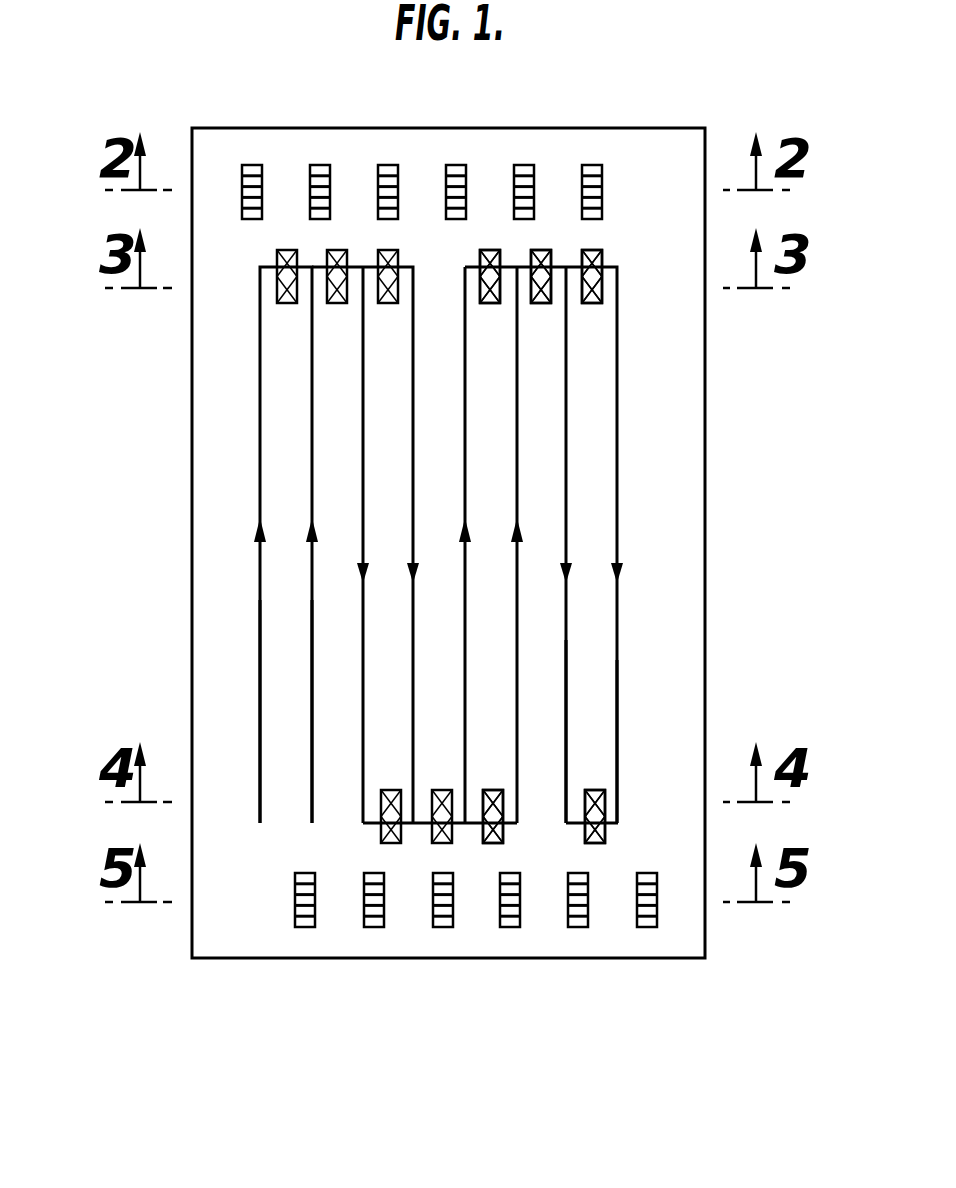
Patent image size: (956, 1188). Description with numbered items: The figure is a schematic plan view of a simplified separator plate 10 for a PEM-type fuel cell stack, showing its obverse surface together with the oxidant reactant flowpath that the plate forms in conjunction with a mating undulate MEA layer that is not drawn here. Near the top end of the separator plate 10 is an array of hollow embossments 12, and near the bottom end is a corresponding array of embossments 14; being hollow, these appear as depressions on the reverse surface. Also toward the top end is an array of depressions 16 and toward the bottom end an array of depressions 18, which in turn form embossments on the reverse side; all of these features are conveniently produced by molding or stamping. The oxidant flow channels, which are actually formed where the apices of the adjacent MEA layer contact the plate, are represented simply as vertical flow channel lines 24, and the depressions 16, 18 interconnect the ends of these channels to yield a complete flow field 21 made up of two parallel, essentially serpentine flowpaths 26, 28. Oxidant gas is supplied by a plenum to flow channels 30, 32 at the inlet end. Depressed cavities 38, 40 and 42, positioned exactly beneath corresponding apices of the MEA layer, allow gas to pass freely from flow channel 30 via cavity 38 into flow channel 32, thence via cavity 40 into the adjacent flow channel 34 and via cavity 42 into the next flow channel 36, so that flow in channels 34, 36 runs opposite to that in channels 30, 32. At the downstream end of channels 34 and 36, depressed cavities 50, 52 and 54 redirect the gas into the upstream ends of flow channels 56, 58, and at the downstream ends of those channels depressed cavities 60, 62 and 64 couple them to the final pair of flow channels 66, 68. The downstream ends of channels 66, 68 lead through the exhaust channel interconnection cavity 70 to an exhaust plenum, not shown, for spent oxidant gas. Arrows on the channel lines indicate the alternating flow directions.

The separator plate 10 is at (708, 510).
The embossments 12 is at (598, 166).
The embossments 14 is at (505, 928).
The depressions 16 is at (536, 252).
The depressions 18 is at (497, 833).
The flow field 21 is at (498, 743).
The flow channel lines 24 is at (260, 397).
The flowpath 26 is at (617, 415).
The flowpath 28 is at (566, 448).
The flow channel 30 is at (260, 672).
The flow channel 32 is at (312, 638).
The flow channel 34 is at (363, 373).
The flow channel 36 is at (413, 330).
The depressed cavity 38 is at (282, 265).
The depressed cavity 40 is at (337, 268).
The depressed cavity 42 is at (393, 262).
The depressed cavity 50 is at (385, 830).
The depressed cavity 52 is at (433, 845).
The depressed cavity 54 is at (500, 843).
The flow channel 56 is at (465, 480).
The flow channel 58 is at (517, 630).
The depressed cavity 60 is at (490, 303).
The depressed cavity 62 is at (541, 303).
The depressed cavity 64 is at (592, 255).
The flow channel 66 is at (566, 652).
The flow channel 68 is at (618, 670).
The exhaust channel interconnection cavity 70 is at (597, 802).